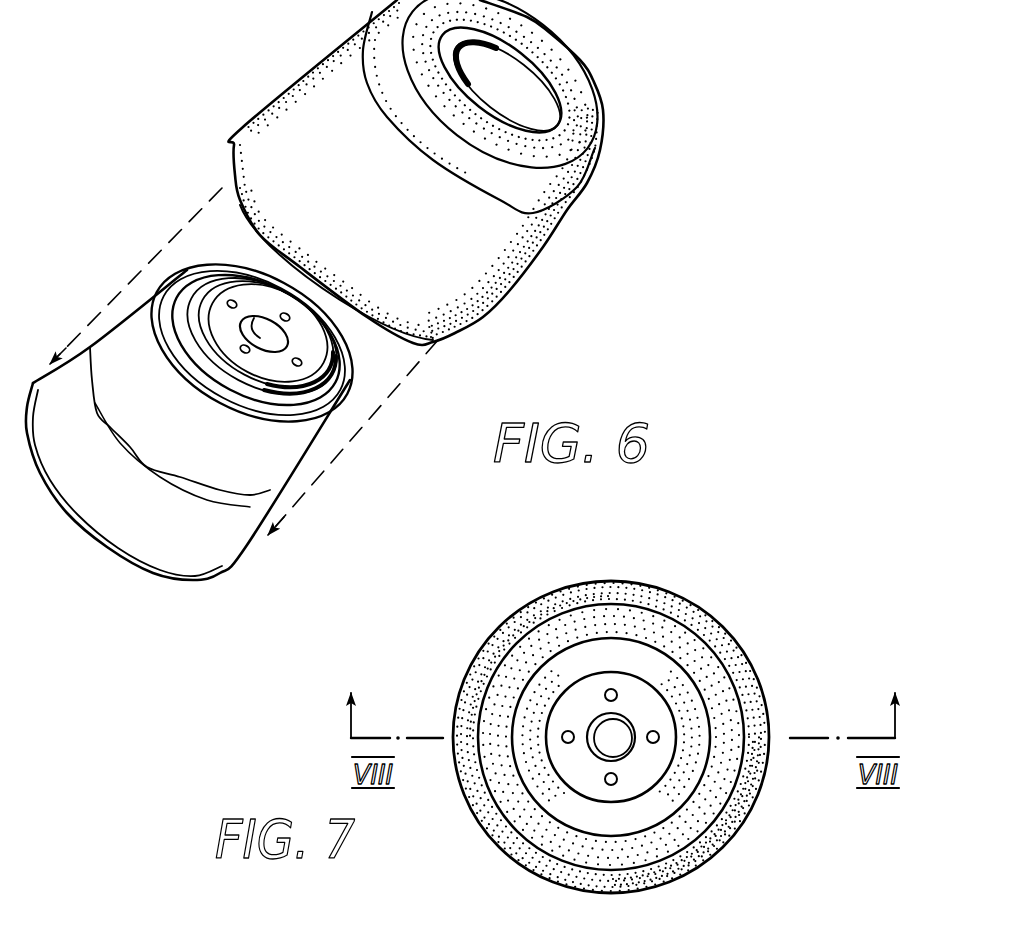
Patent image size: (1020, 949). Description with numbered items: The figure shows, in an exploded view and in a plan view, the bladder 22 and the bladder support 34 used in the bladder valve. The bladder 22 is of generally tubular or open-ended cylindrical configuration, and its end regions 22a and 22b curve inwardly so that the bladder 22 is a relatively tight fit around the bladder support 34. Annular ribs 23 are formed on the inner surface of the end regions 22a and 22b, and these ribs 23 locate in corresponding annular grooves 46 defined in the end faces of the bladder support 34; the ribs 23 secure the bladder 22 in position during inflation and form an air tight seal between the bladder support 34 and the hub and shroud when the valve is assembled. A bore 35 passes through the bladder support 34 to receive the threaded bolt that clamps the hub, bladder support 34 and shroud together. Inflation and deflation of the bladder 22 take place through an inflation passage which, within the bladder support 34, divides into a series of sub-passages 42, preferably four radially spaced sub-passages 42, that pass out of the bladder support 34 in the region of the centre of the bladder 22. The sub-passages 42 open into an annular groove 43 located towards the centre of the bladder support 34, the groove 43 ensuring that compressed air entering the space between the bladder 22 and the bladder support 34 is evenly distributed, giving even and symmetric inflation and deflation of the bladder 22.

In FIG. 6, the bladder 22 is at (543, 248).
In FIG. 7, the bladder 22 is at (744, 822).
In FIG. 6, the end region of the bladder 22a is at (580, 147).
In FIG. 6, the end region of the bladder 22b is at (430, 347).
In FIG. 6, the annular ribs 23 is at (504, 80).
In FIG. 6, the bladder support 34 is at (262, 462).
In FIG. 7, the bladder support 34 is at (660, 713).
In FIG. 6, the bore in the bladder support 35 is at (257, 327).
In FIG. 7, the bore in the bladder support 35 is at (603, 738).
In FIG. 6, the sub-passages 42 is at (299, 362).
In FIG. 7, the sub-passages 42 is at (617, 693).
In FIG. 6, the annular groove 43 is at (217, 497).
In FIG. 6, the annular grooves 46 is at (186, 290).